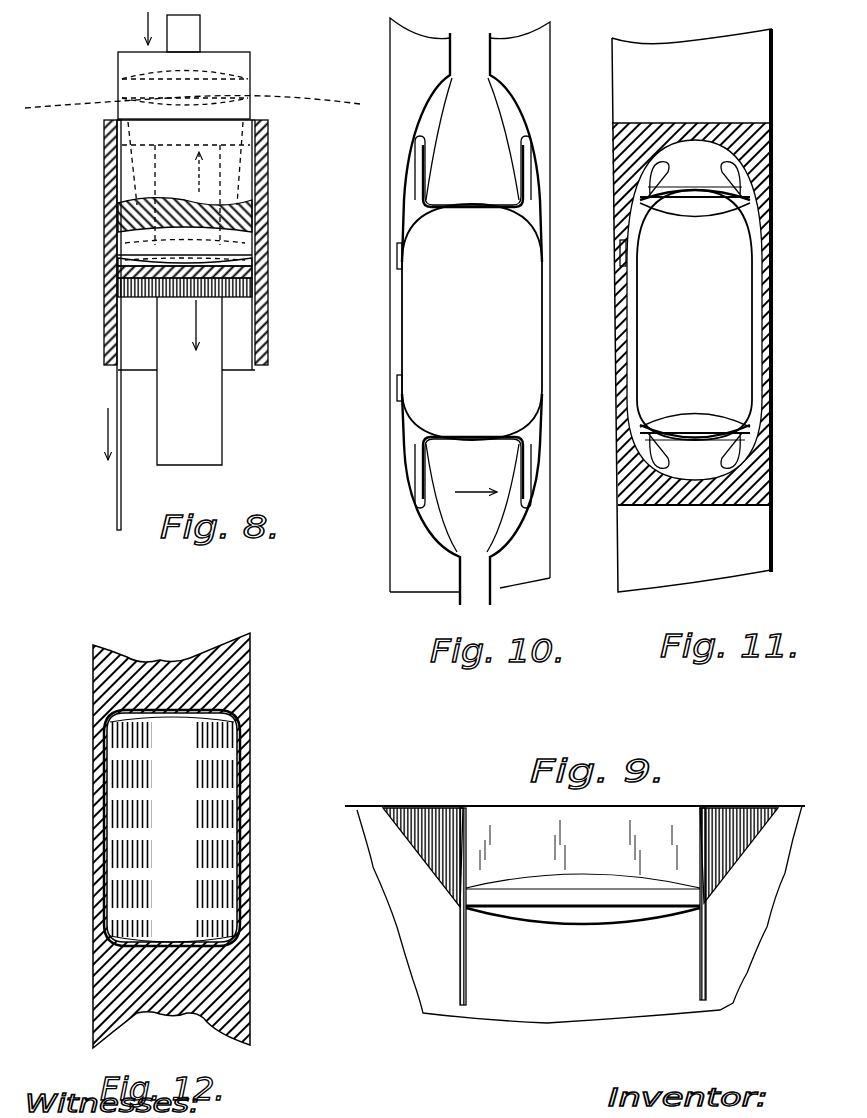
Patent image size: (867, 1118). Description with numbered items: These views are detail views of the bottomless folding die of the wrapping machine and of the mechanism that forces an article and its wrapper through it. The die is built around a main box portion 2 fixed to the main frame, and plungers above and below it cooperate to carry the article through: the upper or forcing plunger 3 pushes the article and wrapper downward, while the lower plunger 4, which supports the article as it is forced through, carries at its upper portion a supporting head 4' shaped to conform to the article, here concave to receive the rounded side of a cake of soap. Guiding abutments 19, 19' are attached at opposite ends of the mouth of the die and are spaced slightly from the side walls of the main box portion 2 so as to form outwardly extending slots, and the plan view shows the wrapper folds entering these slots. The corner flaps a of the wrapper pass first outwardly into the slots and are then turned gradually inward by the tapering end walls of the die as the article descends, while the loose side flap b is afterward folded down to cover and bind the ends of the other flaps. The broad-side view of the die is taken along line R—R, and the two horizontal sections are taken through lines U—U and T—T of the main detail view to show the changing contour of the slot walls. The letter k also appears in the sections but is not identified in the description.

In FIG. 8, the main box portion 2 is at (268, 128).
In FIG. 10, the main box portion 2 is at (540, 52).
In FIG. 12, the main box portion 2 is at (225, 690).
In FIG. 9, the main box portion 2 is at (400, 905).
In FIG. 8, the upper or forcing plunger 3 is at (232, 62).
In FIG. 8, the lower plunger 4 is at (207, 381).
In FIG. 8, the supporting head 4' is at (153, 280).
In FIG. 10, the guiding abutment 19 is at (504, 499).
In FIG. 11, the guiding abutment 19 is at (695, 444).
In FIG. 9, the guiding abutment 19 is at (716, 904).
In FIG. 8, the guiding abutment 19' is at (222, 215).
In FIG. 10, the guiding abutment 19' is at (474, 147).
In FIG. 11, the guiding abutment 19' is at (695, 186).
In FIG. 9, the guiding abutment 19' is at (424, 906).
In FIG. 10, the corner flaps a is at (515, 165).
In FIG. 11, the corner flaps a is at (695, 313).
In FIG. 12, the corner flaps a is at (160, 720).
In FIG. 9, the corner flaps a is at (466, 848).
In FIG. 10, the loose side flap b is at (404, 310).
In FIG. 11, the loose side flap b is at (627, 310).
In FIG. 11, the casing wall k is at (768, 160).
In FIG. 9, the casing wall k is at (579, 964).
In FIG. 8, the section line U— U is at (104, 208).
In FIG. 8, the section line T— T is at (104, 347).
In FIG. 10, the section line R— R is at (471, 184).